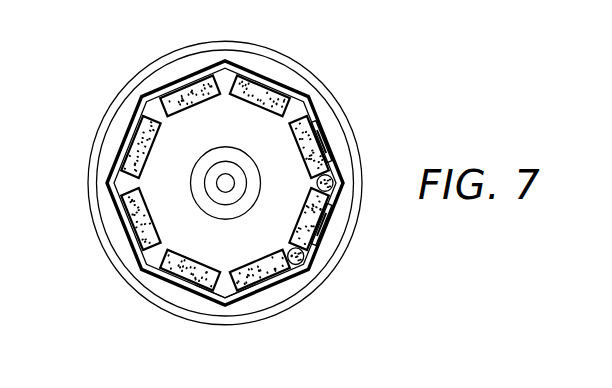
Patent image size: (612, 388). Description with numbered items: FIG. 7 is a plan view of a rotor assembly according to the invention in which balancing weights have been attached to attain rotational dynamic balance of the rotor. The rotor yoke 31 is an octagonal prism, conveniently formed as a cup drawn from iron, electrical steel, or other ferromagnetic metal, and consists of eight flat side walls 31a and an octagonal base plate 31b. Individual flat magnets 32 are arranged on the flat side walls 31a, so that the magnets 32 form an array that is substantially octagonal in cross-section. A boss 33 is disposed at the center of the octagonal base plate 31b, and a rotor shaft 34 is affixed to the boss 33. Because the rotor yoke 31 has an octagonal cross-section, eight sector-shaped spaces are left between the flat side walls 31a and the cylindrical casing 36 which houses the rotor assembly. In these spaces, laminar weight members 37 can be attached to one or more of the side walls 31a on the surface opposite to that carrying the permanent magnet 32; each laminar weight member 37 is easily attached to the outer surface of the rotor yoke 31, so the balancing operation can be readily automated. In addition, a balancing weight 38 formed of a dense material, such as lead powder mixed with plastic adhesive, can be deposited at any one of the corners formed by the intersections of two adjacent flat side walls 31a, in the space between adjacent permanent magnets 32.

The rotor yoke 31 is at (199, 70).
The flat side walls 31a is at (250, 66).
The octagonal base plate 31b is at (222, 258).
The flat magnets 32 is at (131, 131).
The boss 33 is at (236, 130).
The rotor shaft 34 is at (227, 182).
The cylindrical casing 36 is at (195, 313).
The laminar weight members 37 is at (328, 122).
The balancing weight 38 is at (333, 182).